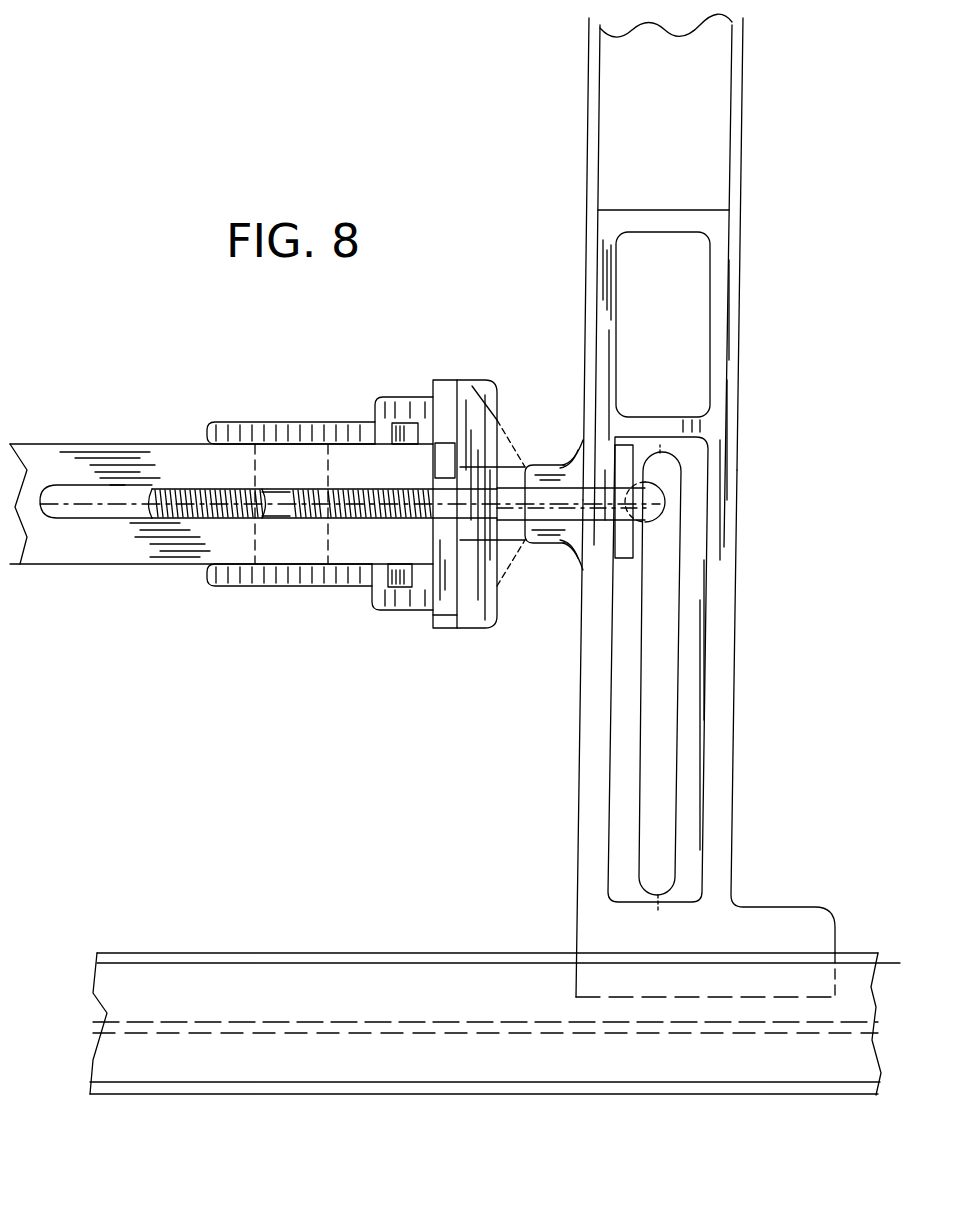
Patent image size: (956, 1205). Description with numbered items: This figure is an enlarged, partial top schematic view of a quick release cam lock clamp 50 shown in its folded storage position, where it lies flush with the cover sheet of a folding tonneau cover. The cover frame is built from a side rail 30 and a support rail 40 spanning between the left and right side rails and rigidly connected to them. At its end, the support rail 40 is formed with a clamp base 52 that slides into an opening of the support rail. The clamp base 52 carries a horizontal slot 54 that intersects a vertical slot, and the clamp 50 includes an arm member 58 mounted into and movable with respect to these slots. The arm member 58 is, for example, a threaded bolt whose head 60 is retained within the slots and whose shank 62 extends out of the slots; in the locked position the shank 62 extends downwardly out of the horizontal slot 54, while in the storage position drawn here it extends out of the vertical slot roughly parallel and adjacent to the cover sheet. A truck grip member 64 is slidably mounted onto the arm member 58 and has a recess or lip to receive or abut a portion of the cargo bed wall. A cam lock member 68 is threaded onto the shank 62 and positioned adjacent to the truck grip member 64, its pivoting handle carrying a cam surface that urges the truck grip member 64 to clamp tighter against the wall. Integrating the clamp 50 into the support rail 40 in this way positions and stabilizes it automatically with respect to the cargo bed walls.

The side rail 30 is at (432, 952).
The support rail 40 is at (744, 287).
The cam lock clamp 50 is at (428, 648).
The clamp base 52 is at (735, 643).
The horizontal slot 54 is at (678, 745).
The arm member 58 is at (558, 540).
The head 60 is at (646, 498).
The shank 62 is at (553, 462).
The truck grip member 64 is at (470, 612).
The cam lock member 68 is at (127, 566).